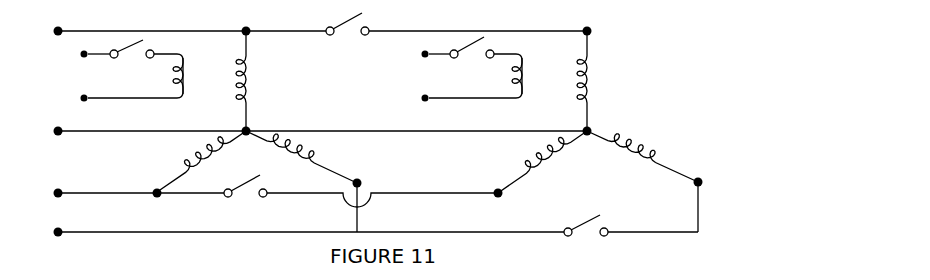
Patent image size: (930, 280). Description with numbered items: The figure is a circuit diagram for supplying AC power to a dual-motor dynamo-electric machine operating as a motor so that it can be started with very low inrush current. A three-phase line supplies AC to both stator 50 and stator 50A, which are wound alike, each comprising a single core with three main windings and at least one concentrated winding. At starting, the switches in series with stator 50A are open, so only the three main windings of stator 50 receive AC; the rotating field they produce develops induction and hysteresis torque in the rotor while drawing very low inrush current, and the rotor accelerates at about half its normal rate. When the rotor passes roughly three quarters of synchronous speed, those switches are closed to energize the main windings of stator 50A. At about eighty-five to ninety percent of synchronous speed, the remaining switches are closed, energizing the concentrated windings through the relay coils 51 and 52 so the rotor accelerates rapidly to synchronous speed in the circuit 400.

The stator 50 is at (261, 130).
The stator 50A is at (609, 130).
The relay coil 51 is at (147, 84).
The relay coil 52 is at (488, 84).
The motor control circuit 400 is at (412, 134).